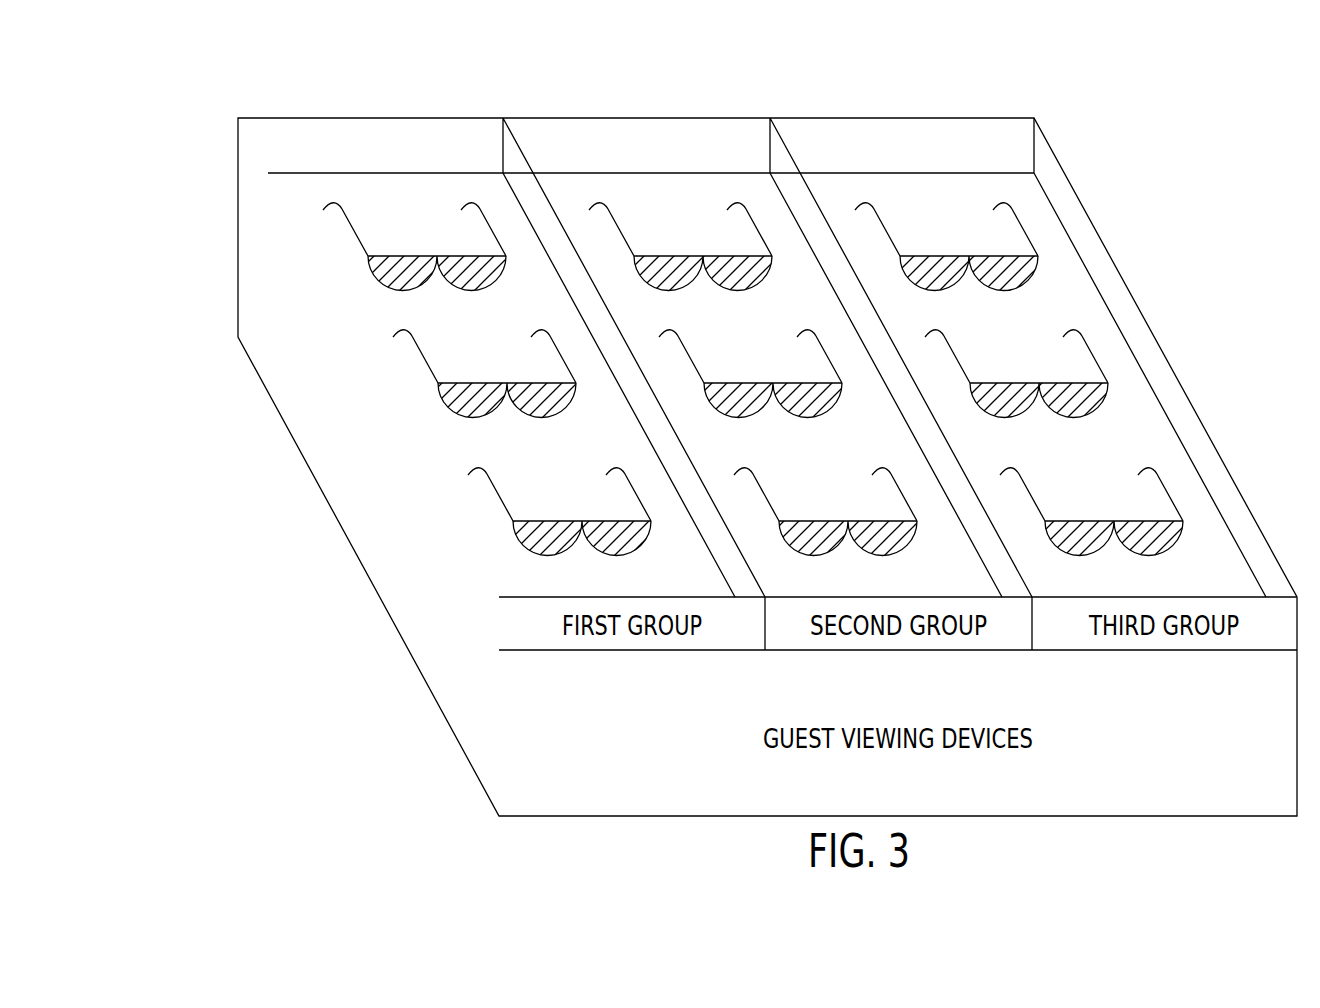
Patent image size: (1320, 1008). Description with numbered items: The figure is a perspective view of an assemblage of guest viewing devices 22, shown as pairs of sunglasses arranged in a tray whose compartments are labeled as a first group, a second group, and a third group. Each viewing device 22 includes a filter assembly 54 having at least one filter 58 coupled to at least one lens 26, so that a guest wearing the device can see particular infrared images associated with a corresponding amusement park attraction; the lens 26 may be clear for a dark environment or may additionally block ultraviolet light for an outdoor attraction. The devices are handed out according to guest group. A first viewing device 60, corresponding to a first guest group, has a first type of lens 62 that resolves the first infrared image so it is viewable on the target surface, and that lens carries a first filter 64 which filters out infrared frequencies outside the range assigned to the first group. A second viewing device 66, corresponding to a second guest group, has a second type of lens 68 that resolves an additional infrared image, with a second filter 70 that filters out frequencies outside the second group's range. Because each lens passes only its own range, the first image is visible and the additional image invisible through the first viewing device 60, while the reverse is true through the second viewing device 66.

The viewing device 22 is at (922, 207).
The lens 26 is at (1028, 285).
The filter assembly 54 is at (362, 260).
The filter 58 is at (1028, 285).
The first viewing device 60 is at (413, 242).
The first type of lens 62 is at (397, 292).
The first filter 64 is at (377, 271).
The second viewing device 66 is at (692, 237).
The second type of lens 68 is at (640, 282).
The second filter 70 is at (757, 287).